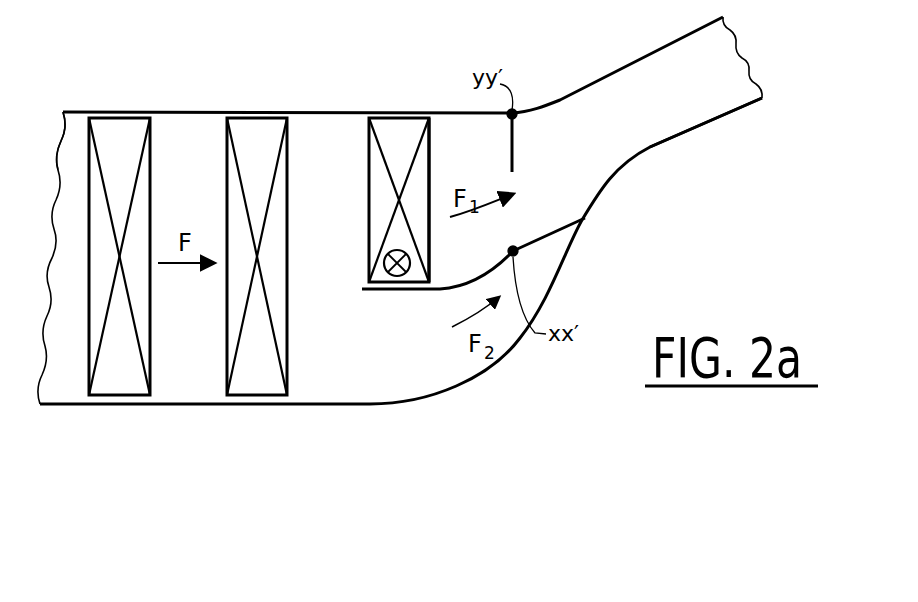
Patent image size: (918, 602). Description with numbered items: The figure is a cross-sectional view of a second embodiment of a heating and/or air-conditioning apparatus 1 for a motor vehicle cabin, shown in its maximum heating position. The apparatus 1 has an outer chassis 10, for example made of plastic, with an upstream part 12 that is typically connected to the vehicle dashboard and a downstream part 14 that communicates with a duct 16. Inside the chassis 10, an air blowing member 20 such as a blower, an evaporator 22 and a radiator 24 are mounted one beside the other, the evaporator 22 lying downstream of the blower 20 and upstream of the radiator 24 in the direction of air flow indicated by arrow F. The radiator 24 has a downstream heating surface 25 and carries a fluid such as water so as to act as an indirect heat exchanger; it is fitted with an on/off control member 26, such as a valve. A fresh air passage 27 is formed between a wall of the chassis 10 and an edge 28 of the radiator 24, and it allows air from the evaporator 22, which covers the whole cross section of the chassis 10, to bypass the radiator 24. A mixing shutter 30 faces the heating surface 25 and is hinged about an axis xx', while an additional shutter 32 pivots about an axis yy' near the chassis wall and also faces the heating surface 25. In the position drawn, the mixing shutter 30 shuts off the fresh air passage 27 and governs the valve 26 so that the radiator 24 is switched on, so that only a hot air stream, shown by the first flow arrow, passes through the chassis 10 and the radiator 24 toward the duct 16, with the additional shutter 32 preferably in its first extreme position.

The heating and/or air-conditioning apparatus 1 is at (230, 102).
The outer chassis 10 is at (181, 106).
The upstream part 12 is at (77, 133).
The downstream part 14 is at (555, 107).
The duct 16 is at (700, 62).
The air blowing member 20 is at (114, 378).
The evaporator 22 is at (247, 378).
The radiator 24 is at (393, 133).
The downstream heating surface 25 is at (434, 143).
The control member 26 is at (397, 291).
The fresh air passage 27 is at (490, 373).
The edge of the radiator 28 is at (375, 291).
The mixing shutter 30 is at (553, 234).
The additional shutter 32 is at (513, 149).